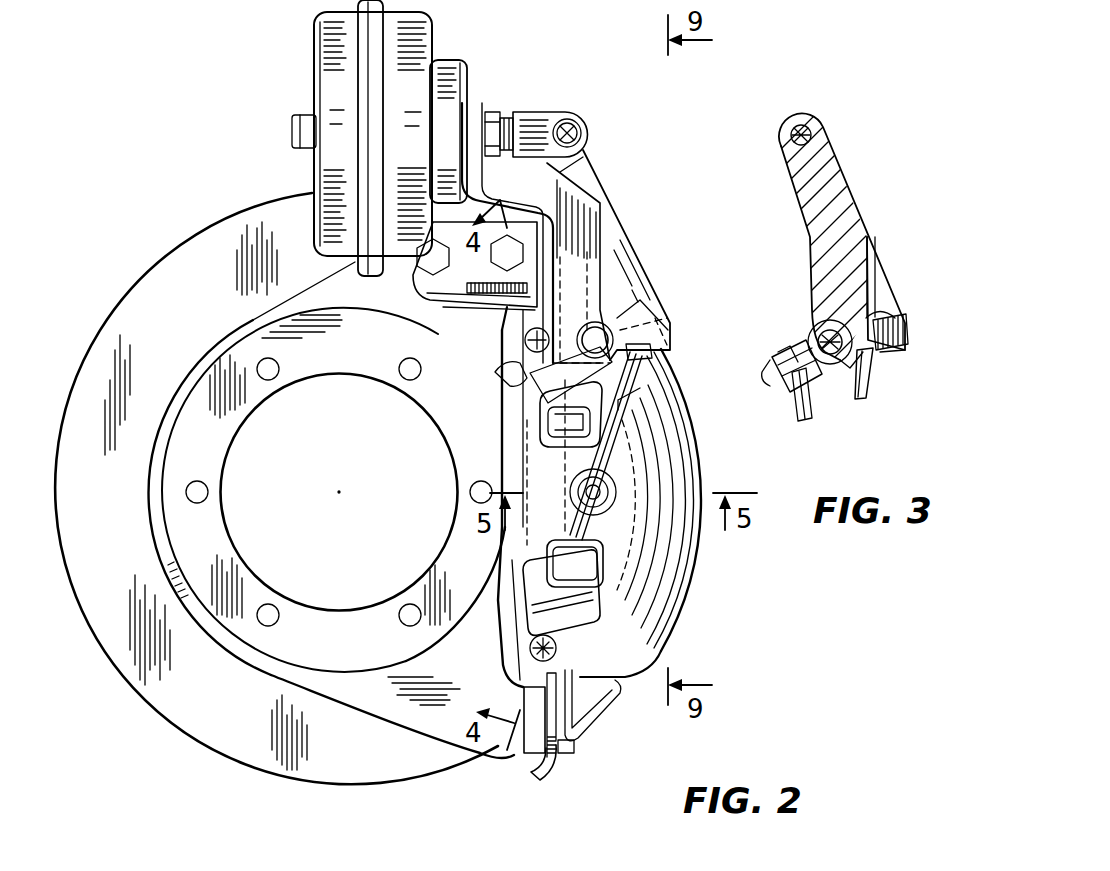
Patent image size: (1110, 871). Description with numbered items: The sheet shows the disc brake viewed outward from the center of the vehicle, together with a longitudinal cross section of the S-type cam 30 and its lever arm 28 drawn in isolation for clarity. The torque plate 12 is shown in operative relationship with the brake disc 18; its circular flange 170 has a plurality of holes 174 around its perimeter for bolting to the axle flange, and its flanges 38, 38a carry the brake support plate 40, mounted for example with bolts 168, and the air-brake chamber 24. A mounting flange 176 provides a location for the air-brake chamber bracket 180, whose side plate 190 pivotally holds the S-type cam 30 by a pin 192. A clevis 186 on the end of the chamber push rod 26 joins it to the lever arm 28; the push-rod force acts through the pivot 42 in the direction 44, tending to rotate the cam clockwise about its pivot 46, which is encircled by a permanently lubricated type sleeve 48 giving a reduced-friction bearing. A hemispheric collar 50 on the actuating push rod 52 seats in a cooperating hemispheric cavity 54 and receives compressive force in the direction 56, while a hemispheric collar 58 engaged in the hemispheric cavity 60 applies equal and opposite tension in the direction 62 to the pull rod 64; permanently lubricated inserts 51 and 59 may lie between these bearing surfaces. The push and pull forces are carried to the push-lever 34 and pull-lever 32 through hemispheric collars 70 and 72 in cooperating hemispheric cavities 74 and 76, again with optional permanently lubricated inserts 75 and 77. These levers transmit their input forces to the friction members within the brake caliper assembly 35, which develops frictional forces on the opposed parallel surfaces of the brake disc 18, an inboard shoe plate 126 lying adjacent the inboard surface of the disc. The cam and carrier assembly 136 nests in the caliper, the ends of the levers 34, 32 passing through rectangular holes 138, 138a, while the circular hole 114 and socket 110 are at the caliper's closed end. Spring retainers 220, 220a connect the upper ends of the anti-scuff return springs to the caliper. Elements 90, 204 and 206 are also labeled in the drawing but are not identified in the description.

In FIG. 2, the torque plate 12 is at (191, 372).
In FIG. 2, the brake disc 18 is at (199, 230).
In FIG. 2, the air-brake chamber 24 is at (322, 33).
In FIG. 2, the chamber push rod 26 is at (511, 113).
In FIG. 2, the lever arm 28 is at (607, 172).
In FIG. 3, the lever arm 28 is at (833, 168).
In FIG. 2, the S-type cam 30 is at (662, 298).
In FIG. 3, the S-type cam 30 is at (878, 238).
In FIG. 2, the pull-lever 32 is at (560, 446).
In FIG. 2, the push-lever 34 is at (606, 582).
In FIG. 2, the brake caliper assembly 35 is at (700, 597).
In FIG. 2, the flange 38 is at (484, 317).
In FIG. 2, the flange 38a is at (530, 701).
In FIG. 2, the brake support plate 40 is at (558, 784).
In FIG. 3, the pivot 42 is at (805, 123).
In FIG. 3, the direction 44 is at (890, 137).
In FIG. 3, the pivot 46 is at (823, 318).
In FIG. 3, the permanently lubricated type sleeve 48 is at (818, 342).
In FIG. 3, the hemispheric collar 50 is at (906, 338).
In FIG. 2, the permanently lubricated insert 51 is at (663, 360).
In FIG. 3, the permanently lubricated insert 51 is at (858, 330).
In FIG. 2, the actuating push rod 52 is at (645, 380).
In FIG. 3, the actuating push rod 52 is at (879, 380).
In FIG. 3, the hemispheric cavity 54 is at (874, 307).
In FIG. 3, the direction 56 is at (847, 451).
In FIG. 3, the hemispheric collar 58 is at (812, 383).
In FIG. 2, the permanently lubricated insert 59 is at (495, 380).
In FIG. 3, the permanently lubricated insert 59 is at (770, 390).
In FIG. 3, the hemispheric cavity 60 is at (797, 412).
In FIG. 3, the direction 62 is at (815, 436).
In FIG. 2, the pull rod 64 is at (538, 408).
In FIG. 3, the pull rod 64 is at (801, 427).
In FIG. 2, the hemispheric collar 70 is at (645, 560).
In FIG. 2, the hemispheric collar 72 is at (641, 425).
In FIG. 2, the hemispheric cavity 74 is at (542, 558).
In FIG. 2, the permanently lubricated insert 75 is at (536, 548).
In FIG. 2, the hemispheric cavity 76 is at (546, 423).
In FIG. 2, the permanently lubricated insert 77 is at (548, 440).
In FIG. 2, the lining backing 90 is at (642, 538).
In FIG. 2, the socket 110 is at (610, 493).
In FIG. 2, the circular hole 114 is at (605, 503).
In FIG. 2, the inboard shoe plate 126 is at (605, 713).
In FIG. 2, the cam and carrier assembly 136 is at (603, 626).
In FIG. 2, the rectangular hole 138 is at (530, 588).
In FIG. 2, the rectangular hole 138a is at (655, 400).
In FIG. 2, the bolts 168 is at (574, 749).
In FIG. 2, the circular flange 170 is at (178, 528).
In FIG. 2, the holes 174 is at (274, 606).
In FIG. 2, the mounting flange 176 is at (438, 283).
In FIG. 2, the air-brake chamber bracket 180 is at (603, 213).
In FIG. 2, the clevis 186 is at (566, 114).
In FIG. 2, the side plate 190 is at (590, 230).
In FIG. 2, the pin 192 is at (606, 335).
In FIG. 2, the clevis pin 204 is at (583, 120).
In FIG. 2, the clevis eye 206 is at (593, 140).
In FIG. 2, the spring retainer 220 is at (530, 648).
In FIG. 2, the spring retainer 220a is at (526, 336).